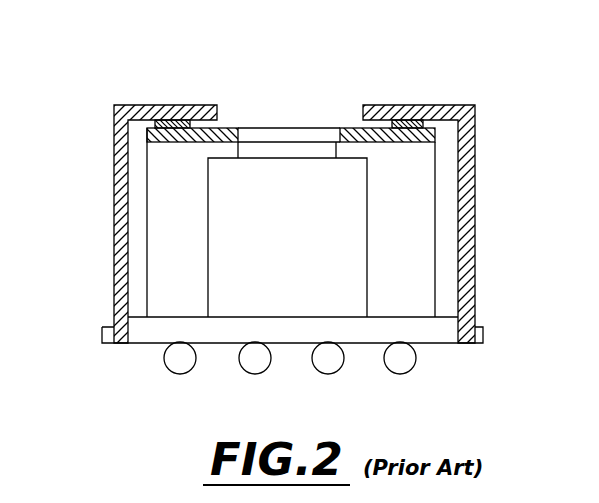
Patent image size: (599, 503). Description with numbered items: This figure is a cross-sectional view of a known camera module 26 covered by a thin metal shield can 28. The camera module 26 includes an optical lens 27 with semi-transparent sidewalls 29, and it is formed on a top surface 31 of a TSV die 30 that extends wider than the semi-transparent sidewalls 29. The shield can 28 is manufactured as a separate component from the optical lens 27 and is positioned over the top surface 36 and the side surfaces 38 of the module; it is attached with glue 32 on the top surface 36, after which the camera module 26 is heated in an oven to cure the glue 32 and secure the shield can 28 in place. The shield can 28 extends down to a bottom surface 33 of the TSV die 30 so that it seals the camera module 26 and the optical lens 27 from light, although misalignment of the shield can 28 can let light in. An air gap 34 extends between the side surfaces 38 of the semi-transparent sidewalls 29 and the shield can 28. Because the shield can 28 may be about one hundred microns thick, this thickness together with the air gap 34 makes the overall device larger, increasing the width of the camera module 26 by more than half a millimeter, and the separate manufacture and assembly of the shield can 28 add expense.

The camera module 26 is at (312, 218).
The optical lens 27 is at (247, 188).
The shield can 28 is at (115, 258).
The semi-transparent sidewalls 29 is at (182, 207).
The TSV die 30 is at (157, 332).
The top surface 31 is at (408, 311).
The glue 32 is at (171, 128).
The bottom surface 33 is at (444, 352).
The air gap 34 is at (447, 230).
The top surface 36 is at (343, 118).
The side surfaces 38 is at (141, 292).